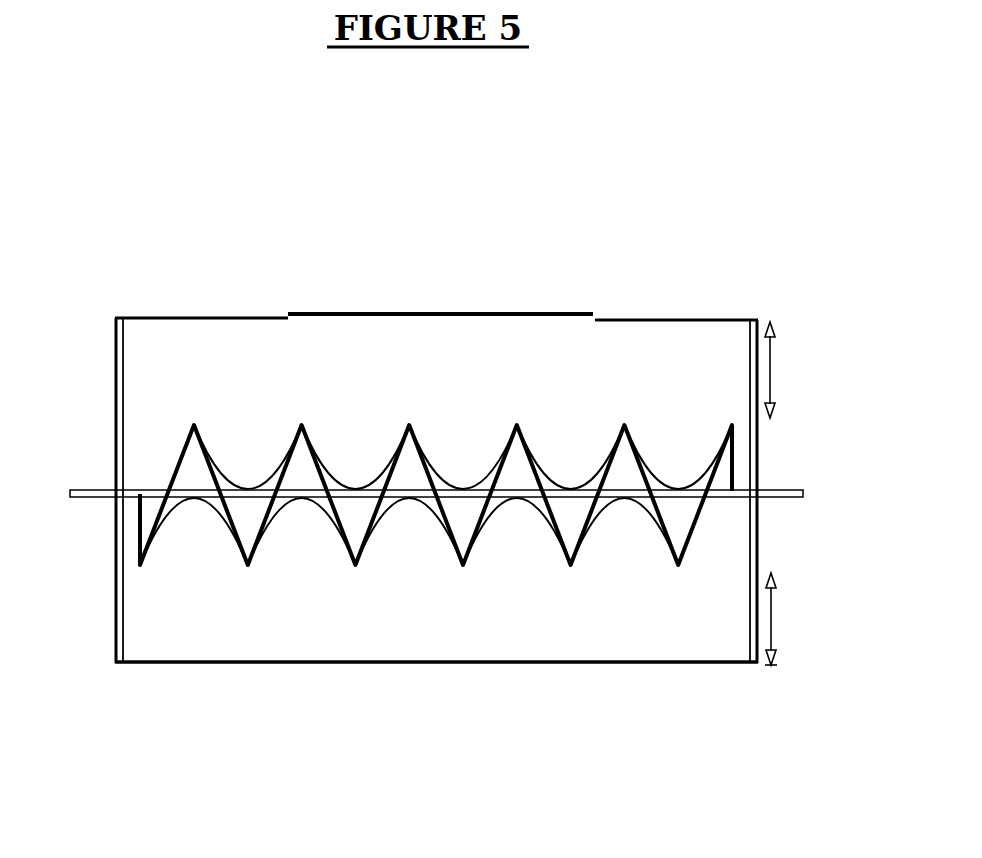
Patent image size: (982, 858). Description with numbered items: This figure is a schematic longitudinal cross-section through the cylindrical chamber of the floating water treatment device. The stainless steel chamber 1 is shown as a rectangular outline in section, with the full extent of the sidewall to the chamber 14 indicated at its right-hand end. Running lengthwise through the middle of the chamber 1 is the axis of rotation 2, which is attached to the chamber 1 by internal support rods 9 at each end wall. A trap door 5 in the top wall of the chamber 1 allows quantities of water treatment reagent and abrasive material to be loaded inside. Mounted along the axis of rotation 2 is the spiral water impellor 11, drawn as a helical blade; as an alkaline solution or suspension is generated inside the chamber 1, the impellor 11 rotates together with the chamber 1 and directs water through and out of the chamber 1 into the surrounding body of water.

The stainless steel chamber 1 is at (198, 311).
The axis of rotation of chamber 2 is at (87, 479).
The trap door for loading reagents 5 is at (479, 302).
The internal support rods for rotational axis 9 is at (135, 419).
The spiral water impellor 11 is at (557, 466).
The full extent of sidewall to chamber 14 is at (787, 376).